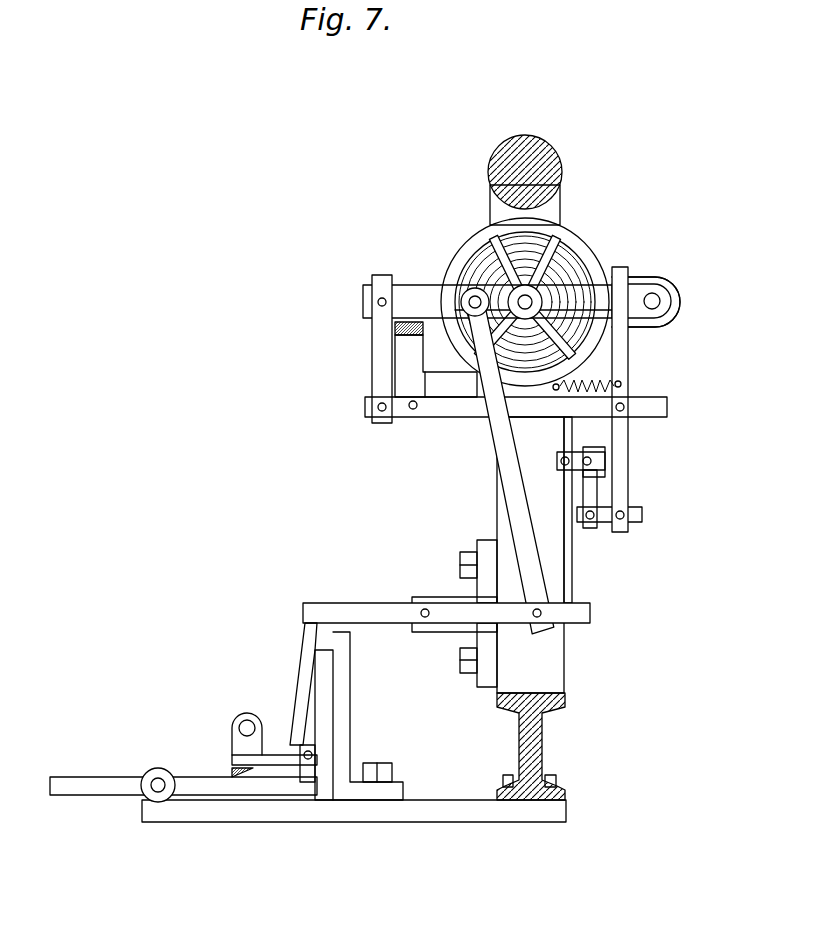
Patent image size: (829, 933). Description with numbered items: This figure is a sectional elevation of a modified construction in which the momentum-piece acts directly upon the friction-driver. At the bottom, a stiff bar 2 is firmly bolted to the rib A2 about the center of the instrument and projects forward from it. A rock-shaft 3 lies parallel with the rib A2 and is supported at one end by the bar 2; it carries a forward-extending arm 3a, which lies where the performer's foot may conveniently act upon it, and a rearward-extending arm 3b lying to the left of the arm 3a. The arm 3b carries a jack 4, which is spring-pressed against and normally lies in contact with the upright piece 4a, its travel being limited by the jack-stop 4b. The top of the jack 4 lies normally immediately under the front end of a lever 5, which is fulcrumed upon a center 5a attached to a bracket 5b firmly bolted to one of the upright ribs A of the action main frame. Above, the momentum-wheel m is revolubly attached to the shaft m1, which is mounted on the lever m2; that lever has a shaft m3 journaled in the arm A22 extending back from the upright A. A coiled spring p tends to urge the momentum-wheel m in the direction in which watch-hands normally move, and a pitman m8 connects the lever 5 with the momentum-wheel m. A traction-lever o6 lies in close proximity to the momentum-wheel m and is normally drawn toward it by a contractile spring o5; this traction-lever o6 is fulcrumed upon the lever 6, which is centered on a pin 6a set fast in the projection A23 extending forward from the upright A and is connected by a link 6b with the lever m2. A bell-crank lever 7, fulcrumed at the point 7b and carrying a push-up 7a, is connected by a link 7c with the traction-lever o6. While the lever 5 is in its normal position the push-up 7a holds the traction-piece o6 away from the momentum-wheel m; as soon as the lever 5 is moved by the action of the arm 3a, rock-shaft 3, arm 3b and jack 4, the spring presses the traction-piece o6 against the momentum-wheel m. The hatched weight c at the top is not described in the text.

The weight c is at (545, 158).
The momentum-wheel m is at (456, 258).
The coiled spring p is at (568, 265).
The shaft m1 is at (525, 320).
The lever m2 is at (487, 301).
The shaft m3 is at (653, 293).
The pitman m8 is at (499, 443).
The upright rib A is at (530, 555).
The rib A2 is at (543, 743).
The arm A22 is at (680, 302).
The projection A23 is at (436, 359).
The spring o5 is at (578, 381).
The traction-lever o6 is at (627, 358).
The lever 6 is at (516, 409).
The pin 6a is at (412, 409).
The link 6b is at (378, 349).
The bell-crank lever 7 is at (562, 453).
The push-up 7a is at (567, 495).
The fulcrum point 7b is at (588, 457).
The link 7c is at (607, 520).
The lever 5 is at (330, 606).
The center 5a is at (421, 610).
The bracket 5b is at (437, 602).
The jack 4 is at (300, 683).
The upright piece 4a is at (340, 690).
The jack-stop 4b is at (241, 727).
The rock-shaft 3 is at (156, 782).
The forward-extending arm 3a is at (65, 786).
The rearward-extending arm 3b is at (187, 782).
The bar 2 is at (423, 808).